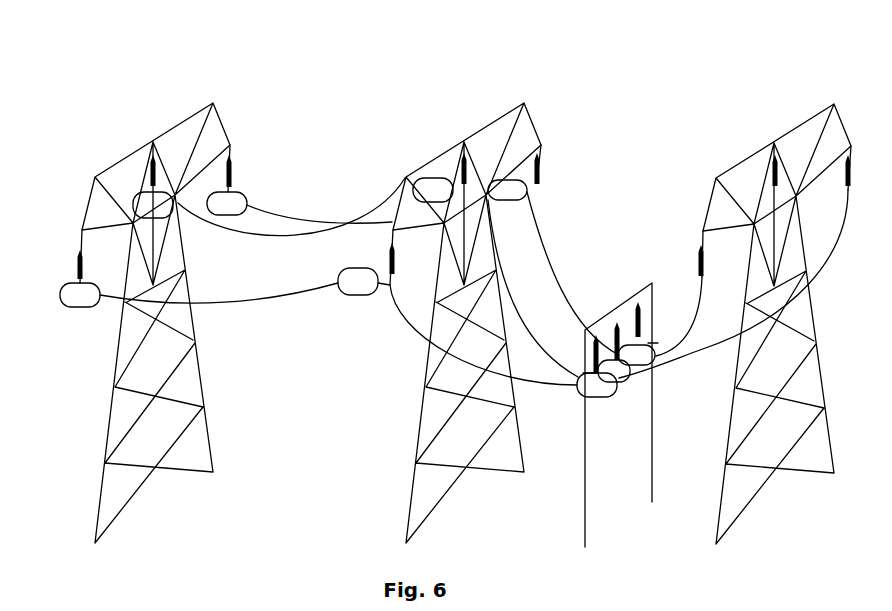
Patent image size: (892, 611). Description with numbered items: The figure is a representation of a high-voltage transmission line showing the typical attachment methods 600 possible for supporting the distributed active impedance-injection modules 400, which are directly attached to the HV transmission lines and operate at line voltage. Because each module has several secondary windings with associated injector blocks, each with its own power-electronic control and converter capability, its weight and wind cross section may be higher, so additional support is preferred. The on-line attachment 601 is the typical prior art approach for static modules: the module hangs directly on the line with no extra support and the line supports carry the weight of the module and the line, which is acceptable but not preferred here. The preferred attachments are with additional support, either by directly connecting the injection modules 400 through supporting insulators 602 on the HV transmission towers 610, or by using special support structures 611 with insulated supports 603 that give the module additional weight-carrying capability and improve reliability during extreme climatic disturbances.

The attachment methods 600 is at (397, 50).
The HV transmission tower 610 is at (96, 178).
The supporting insulator 602 is at (74, 264).
The injection module 400 is at (60, 295).
The on-line attachment 601 is at (381, 298).
The insulated support 603 is at (630, 323).
The special support structure 611 is at (650, 287).